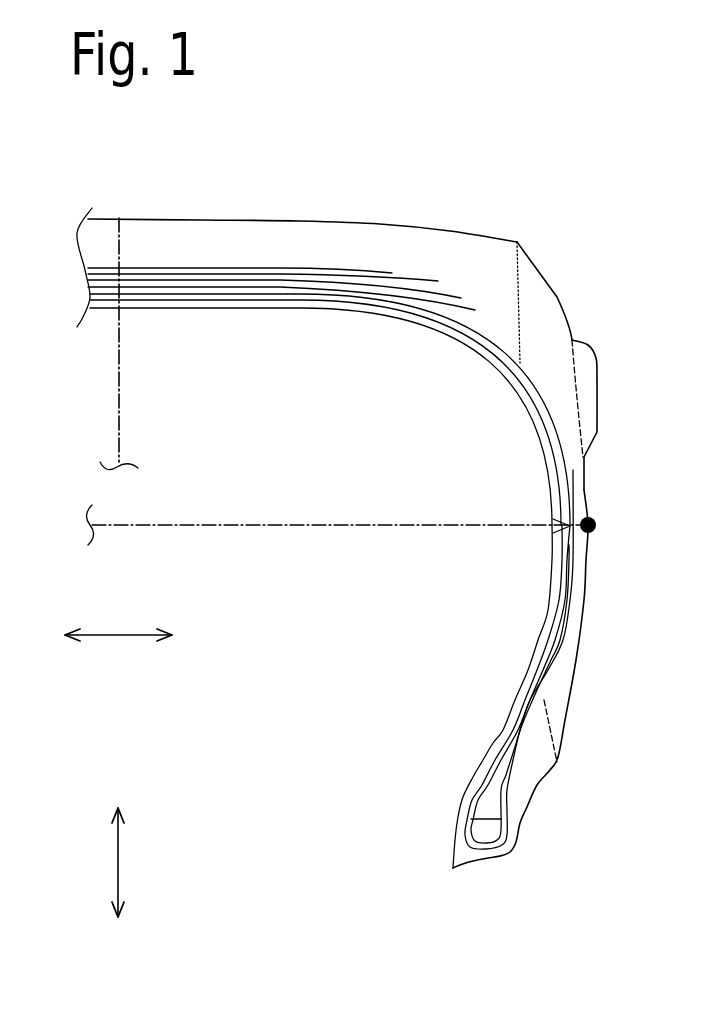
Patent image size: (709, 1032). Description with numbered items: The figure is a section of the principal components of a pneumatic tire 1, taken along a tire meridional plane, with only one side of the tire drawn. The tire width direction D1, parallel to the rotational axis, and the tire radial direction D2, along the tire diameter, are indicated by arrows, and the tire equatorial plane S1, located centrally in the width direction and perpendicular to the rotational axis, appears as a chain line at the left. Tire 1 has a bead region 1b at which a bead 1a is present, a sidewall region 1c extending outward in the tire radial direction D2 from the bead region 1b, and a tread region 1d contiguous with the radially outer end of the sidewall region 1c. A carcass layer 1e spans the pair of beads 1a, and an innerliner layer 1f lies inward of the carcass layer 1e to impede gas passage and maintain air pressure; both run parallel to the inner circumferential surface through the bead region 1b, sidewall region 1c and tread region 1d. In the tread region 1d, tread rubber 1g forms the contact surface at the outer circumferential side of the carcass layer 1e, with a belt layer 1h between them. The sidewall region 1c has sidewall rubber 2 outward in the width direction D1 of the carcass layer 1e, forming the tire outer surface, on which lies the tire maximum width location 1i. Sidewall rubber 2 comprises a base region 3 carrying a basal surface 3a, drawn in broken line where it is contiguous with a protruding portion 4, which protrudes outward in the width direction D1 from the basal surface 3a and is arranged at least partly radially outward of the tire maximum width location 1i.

The tire 1 is at (598, 141).
The bead 1a is at (490, 786).
The bead region 1b is at (535, 805).
The sidewall region 1c is at (628, 318).
The tread region 1d is at (165, 191).
The carcass layer 1e is at (328, 302).
The innerliner layer 1f is at (242, 310).
The tread rubber 1g is at (307, 219).
The belt layer 1h is at (226, 267).
The tire maximum width location 1i is at (598, 526).
The sidewall rubber 2 is at (556, 293).
The base region 3 is at (586, 572).
The basal surface 3a is at (590, 502).
The protruding portion 4 is at (598, 382).
The tire equatorial plane S1 is at (122, 388).
The tire width direction D1 is at (118, 646).
The tire radial direction D2 is at (132, 862).